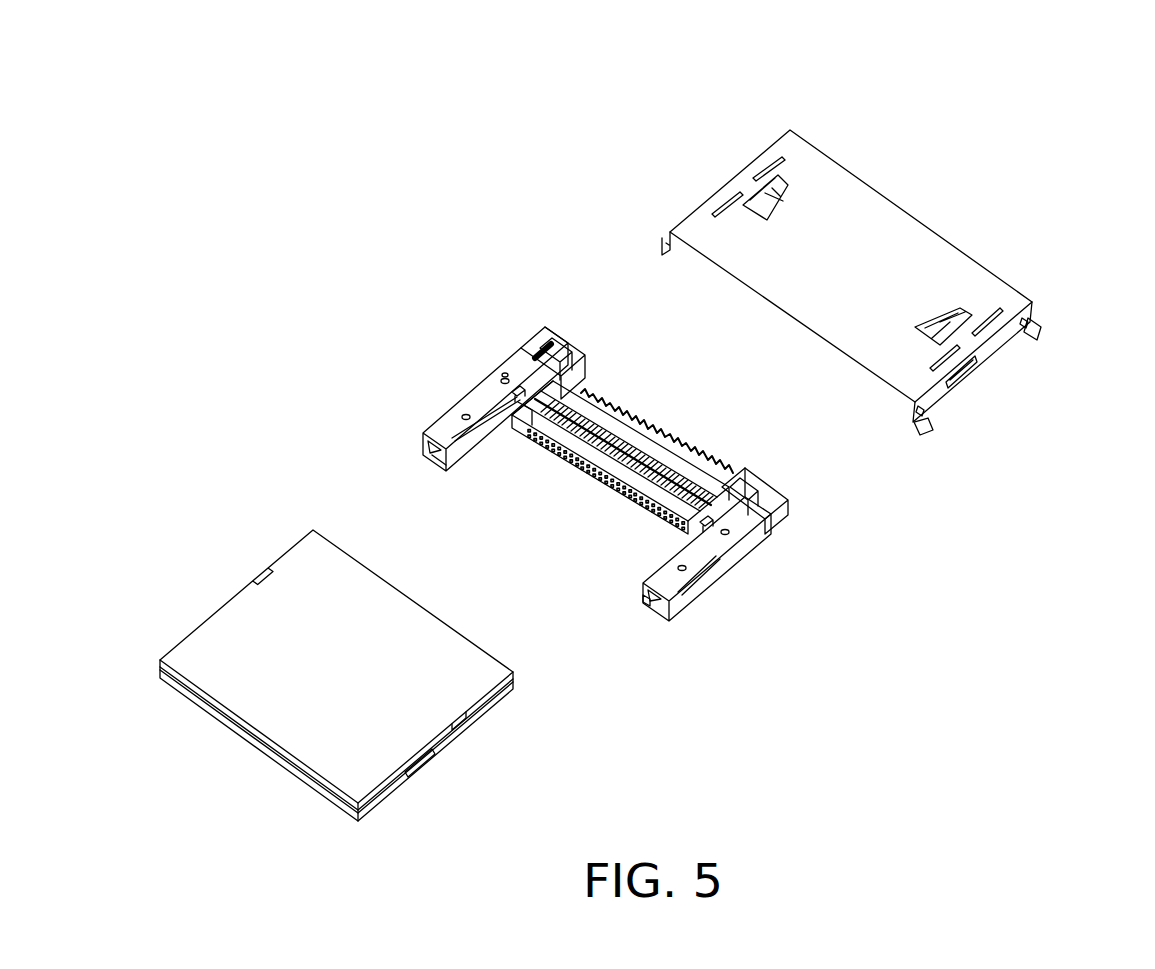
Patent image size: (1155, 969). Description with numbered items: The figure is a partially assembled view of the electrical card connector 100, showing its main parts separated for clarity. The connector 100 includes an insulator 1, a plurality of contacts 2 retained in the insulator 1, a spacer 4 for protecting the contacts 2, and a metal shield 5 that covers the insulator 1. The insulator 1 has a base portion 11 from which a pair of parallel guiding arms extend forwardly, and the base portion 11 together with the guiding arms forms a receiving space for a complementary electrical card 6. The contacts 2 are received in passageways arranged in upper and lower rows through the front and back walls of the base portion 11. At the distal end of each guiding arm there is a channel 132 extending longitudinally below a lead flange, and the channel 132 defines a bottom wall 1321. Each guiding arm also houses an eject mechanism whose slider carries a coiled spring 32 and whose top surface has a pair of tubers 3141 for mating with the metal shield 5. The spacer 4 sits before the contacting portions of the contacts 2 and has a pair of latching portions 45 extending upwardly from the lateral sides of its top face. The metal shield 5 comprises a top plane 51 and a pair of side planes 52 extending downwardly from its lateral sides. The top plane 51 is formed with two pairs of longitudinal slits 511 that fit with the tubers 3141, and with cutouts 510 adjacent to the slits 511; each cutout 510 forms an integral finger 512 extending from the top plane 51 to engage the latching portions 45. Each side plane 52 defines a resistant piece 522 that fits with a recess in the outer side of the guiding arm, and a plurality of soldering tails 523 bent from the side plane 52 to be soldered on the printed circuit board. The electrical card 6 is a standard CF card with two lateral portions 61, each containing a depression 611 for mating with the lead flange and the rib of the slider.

The electrical card connector 100 is at (680, 47).
The metal shield 5 is at (1033, 478).
The top plane 51 is at (893, 230).
The cutout 510 is at (760, 170).
The longitudinal slits 511 is at (720, 207).
The finger 512 is at (760, 190).
The side plane 52 is at (995, 343).
The resistant piece 522 is at (957, 380).
The soldering tails 523 is at (1040, 333).
The insulator 1 is at (753, 540).
The base portion 11 is at (647, 430).
The contacts 2 is at (583, 415).
The coiled spring 32 is at (542, 350).
The tubers 3141 is at (502, 372).
The latching portions 45 is at (512, 391).
The bottom wall 1321 is at (445, 462).
The spacer 4 is at (532, 420).
The channel 132 is at (645, 603).
The electrical card 6 is at (246, 541).
The lateral portions 61 is at (387, 795).
The depression 611 is at (437, 747).